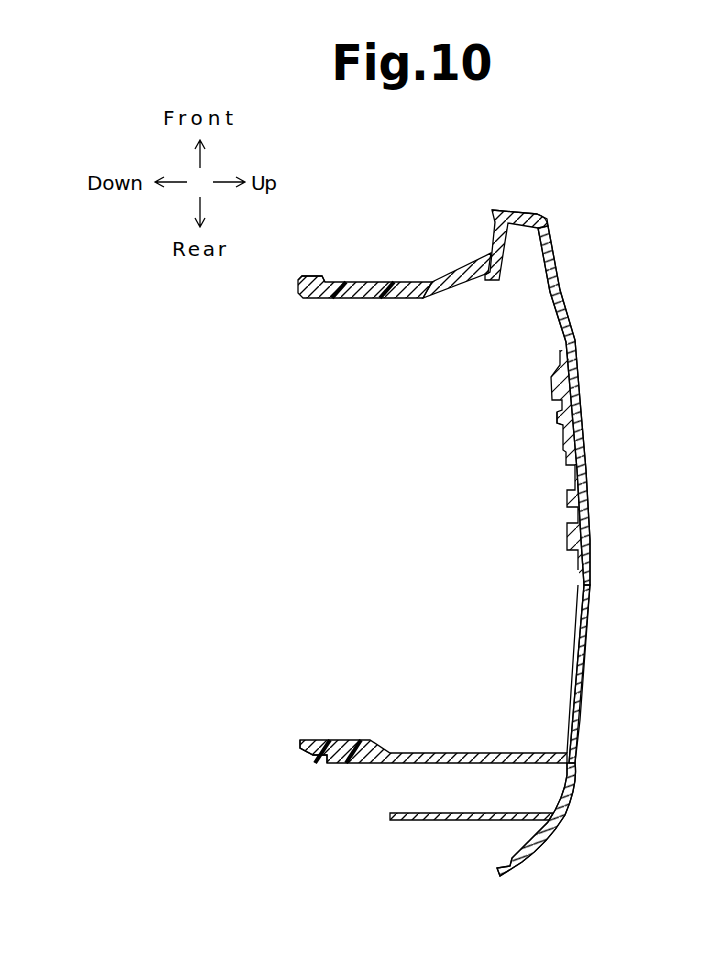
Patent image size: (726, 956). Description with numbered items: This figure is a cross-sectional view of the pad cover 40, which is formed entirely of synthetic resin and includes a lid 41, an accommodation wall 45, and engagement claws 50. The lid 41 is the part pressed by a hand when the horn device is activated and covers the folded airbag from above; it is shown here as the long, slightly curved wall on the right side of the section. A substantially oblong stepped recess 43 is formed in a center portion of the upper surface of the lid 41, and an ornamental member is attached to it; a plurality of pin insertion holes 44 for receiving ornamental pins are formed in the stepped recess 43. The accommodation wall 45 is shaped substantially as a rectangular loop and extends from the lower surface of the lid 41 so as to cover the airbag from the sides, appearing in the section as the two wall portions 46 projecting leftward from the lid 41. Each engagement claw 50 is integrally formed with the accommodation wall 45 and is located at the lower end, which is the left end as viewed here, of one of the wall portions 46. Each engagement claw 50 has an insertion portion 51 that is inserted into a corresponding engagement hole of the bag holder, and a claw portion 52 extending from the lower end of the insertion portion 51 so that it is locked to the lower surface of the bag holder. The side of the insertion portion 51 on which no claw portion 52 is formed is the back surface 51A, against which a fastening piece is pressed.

The pad cover 40 is at (548, 543).
The lid 41 is at (588, 585).
The stepped recess 43 is at (568, 373).
The pin insertion holes 44 is at (560, 428).
The accommodation wall 45 is at (471, 526).
The wall portions 46 is at (403, 287).
The engagement claws 50 is at (425, 522).
The insertion portion 51 is at (432, 520).
The back surface 51A is at (343, 302).
The claw portion 52 is at (307, 520).